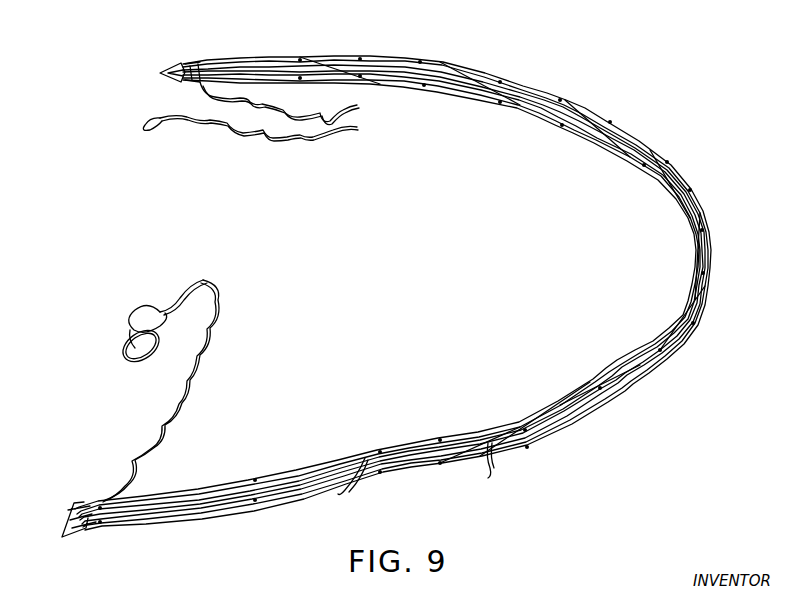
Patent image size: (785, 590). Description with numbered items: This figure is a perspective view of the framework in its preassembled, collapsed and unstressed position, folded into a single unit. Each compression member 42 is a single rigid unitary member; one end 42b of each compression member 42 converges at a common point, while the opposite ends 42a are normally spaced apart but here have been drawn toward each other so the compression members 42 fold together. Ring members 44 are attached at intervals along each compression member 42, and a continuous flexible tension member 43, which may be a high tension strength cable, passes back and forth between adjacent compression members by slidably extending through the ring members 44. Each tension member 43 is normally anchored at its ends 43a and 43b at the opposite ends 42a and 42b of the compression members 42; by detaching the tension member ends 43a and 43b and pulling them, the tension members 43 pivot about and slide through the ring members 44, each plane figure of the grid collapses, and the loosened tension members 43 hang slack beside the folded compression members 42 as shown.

The compression member 42 is at (448, 72).
The opposite end of compression member 42a is at (58, 529).
The end of compression member 42b is at (158, 73).
The flexible tension member 43 is at (343, 122).
The end of tension member 43a is at (203, 279).
The end of tension member 43b is at (158, 131).
The ring member 44 is at (298, 58).